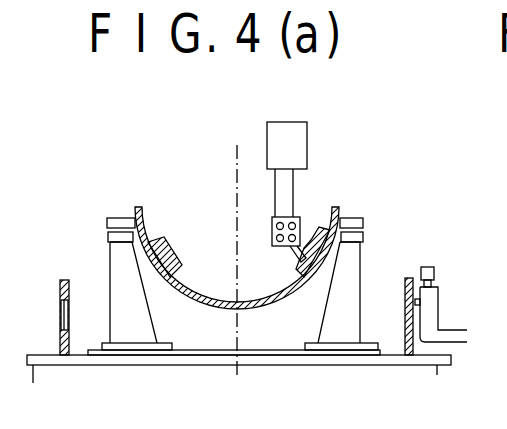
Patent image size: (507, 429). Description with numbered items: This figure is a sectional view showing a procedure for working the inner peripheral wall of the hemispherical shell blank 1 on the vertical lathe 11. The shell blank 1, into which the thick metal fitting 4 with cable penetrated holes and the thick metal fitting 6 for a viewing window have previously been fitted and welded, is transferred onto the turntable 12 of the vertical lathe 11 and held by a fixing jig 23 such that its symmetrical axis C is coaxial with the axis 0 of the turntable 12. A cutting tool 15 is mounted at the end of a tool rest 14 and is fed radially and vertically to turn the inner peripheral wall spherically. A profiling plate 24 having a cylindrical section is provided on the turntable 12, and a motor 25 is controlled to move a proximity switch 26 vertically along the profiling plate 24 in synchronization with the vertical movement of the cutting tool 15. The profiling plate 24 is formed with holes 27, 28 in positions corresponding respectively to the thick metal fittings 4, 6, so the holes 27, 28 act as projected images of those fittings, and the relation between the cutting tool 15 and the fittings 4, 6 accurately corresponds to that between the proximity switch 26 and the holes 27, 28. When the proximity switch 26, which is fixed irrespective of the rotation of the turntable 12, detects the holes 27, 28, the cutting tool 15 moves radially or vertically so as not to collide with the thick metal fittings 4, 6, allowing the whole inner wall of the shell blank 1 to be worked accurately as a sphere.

The hemispherical shell blank 1 is at (199, 292).
The thick metal fitting 4 is at (322, 268).
The thick metal fitting 6 is at (152, 248).
The vertical lathe 11 is at (190, 186).
The turntable 12 is at (423, 373).
The tool rest 14 is at (300, 217).
The cutting tool 15 is at (296, 256).
The fixing jig 23 is at (122, 262).
The profiling plate 24 is at (60, 285).
The motor 25 is at (430, 268).
The proximity switch 26 is at (420, 302).
The hole 27 is at (405, 303).
The hole 28 is at (60, 312).
The axis of the turntable 0 is at (238, 340).
The symmetrical axis C is at (236, 250).